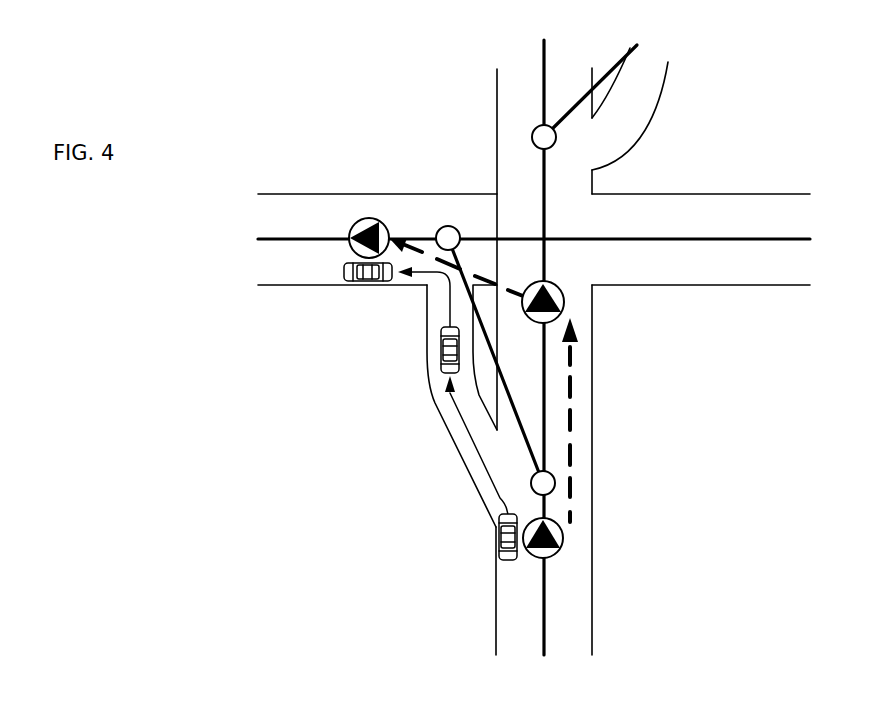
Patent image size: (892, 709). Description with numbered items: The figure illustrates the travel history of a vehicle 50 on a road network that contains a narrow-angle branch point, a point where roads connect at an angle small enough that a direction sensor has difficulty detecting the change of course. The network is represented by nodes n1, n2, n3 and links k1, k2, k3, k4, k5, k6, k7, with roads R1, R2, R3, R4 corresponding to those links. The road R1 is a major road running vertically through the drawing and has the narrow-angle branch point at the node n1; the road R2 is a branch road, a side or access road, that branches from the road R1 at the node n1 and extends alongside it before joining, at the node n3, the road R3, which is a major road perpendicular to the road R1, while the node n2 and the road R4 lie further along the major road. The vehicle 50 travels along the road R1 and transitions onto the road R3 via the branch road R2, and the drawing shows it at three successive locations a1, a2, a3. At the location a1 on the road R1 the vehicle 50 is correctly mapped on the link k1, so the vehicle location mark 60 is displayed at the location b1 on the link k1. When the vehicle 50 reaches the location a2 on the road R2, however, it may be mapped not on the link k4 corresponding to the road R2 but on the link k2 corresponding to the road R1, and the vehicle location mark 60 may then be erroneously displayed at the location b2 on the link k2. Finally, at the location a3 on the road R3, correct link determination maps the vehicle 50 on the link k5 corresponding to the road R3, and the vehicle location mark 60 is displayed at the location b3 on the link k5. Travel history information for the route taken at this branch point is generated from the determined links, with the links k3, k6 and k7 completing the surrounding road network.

The link k1 is at (546, 618).
The link k2 is at (547, 211).
The link k3 is at (541, 83).
The link k4 is at (520, 425).
The link k5 is at (305, 238).
The link k6 is at (732, 241).
The link k7 is at (632, 58).
The node n1 is at (556, 483).
The node n2 is at (532, 136).
The node n3 is at (443, 228).
The road R1 is at (583, 396).
The road R2 is at (443, 405).
The road R3 is at (275, 268).
The road R4 is at (655, 118).
The vehicle 50 is at (402, 434).
The location a1 is at (508, 560).
The location a2 is at (440, 353).
The location a3 is at (372, 283).
The vehicle location mark 60 is at (494, 343).
The location b1 is at (562, 549).
The location b2 is at (568, 304).
The location b3 is at (370, 218).